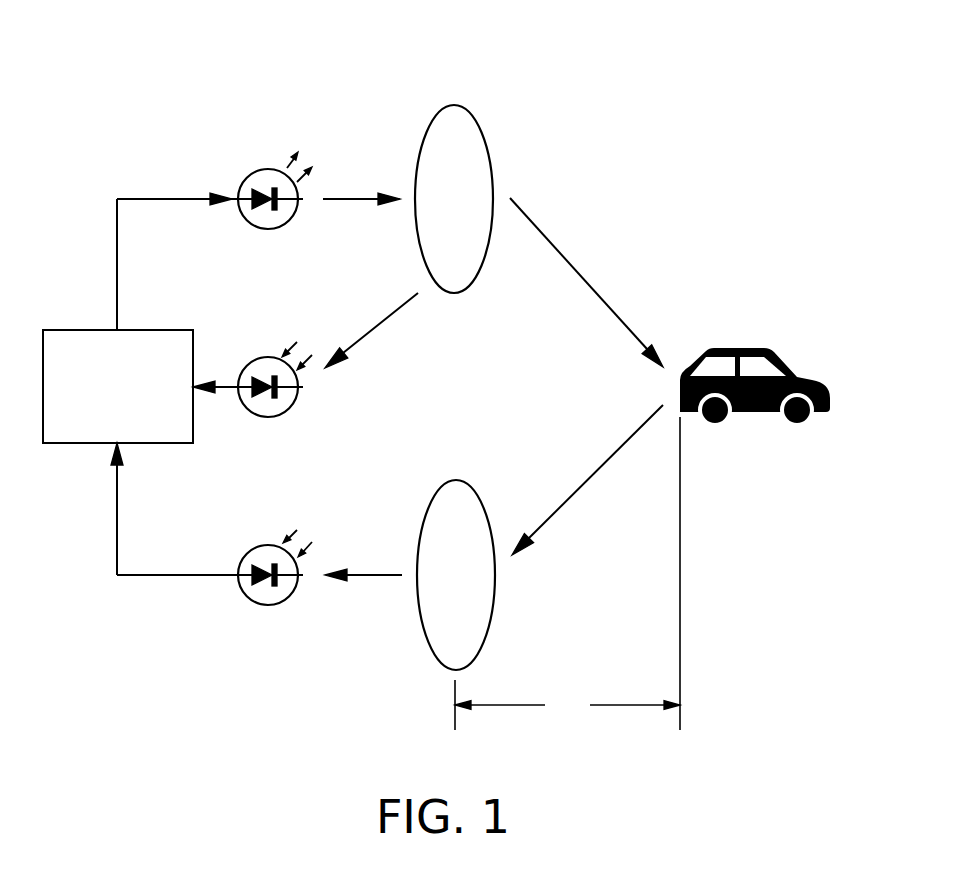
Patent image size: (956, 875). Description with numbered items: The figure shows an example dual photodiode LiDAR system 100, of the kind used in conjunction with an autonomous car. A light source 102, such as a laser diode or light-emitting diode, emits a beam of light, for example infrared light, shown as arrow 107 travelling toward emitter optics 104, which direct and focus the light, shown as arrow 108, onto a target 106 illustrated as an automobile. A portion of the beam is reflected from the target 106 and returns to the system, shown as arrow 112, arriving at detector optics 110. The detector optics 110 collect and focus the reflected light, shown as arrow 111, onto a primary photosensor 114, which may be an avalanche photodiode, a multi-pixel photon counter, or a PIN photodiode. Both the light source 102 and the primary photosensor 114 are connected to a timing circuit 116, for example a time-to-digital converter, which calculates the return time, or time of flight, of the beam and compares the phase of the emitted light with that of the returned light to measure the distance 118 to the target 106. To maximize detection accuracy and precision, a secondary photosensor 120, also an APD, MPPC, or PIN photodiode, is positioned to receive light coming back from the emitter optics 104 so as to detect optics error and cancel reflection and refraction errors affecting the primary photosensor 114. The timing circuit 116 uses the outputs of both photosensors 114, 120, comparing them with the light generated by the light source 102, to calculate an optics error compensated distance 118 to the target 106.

The dual photodiode LiDAR system 100 is at (188, 83).
The light source 102 is at (249, 264).
The emitter optics 104 is at (436, 210).
The target 106 is at (738, 459).
The arrow (emitted beam of light) 107 is at (343, 199).
The arrow (emitted beam of light) 108 is at (580, 273).
The detector optics 110 is at (437, 587).
The arrow (reflected light) 111 is at (385, 575).
The arrow (reflected light) 112 is at (597, 468).
The primary photosensor 114 is at (249, 637).
The timing circuit 116 is at (98, 427).
The distance 118 is at (549, 717).
The secondary photosensor 120 is at (249, 449).